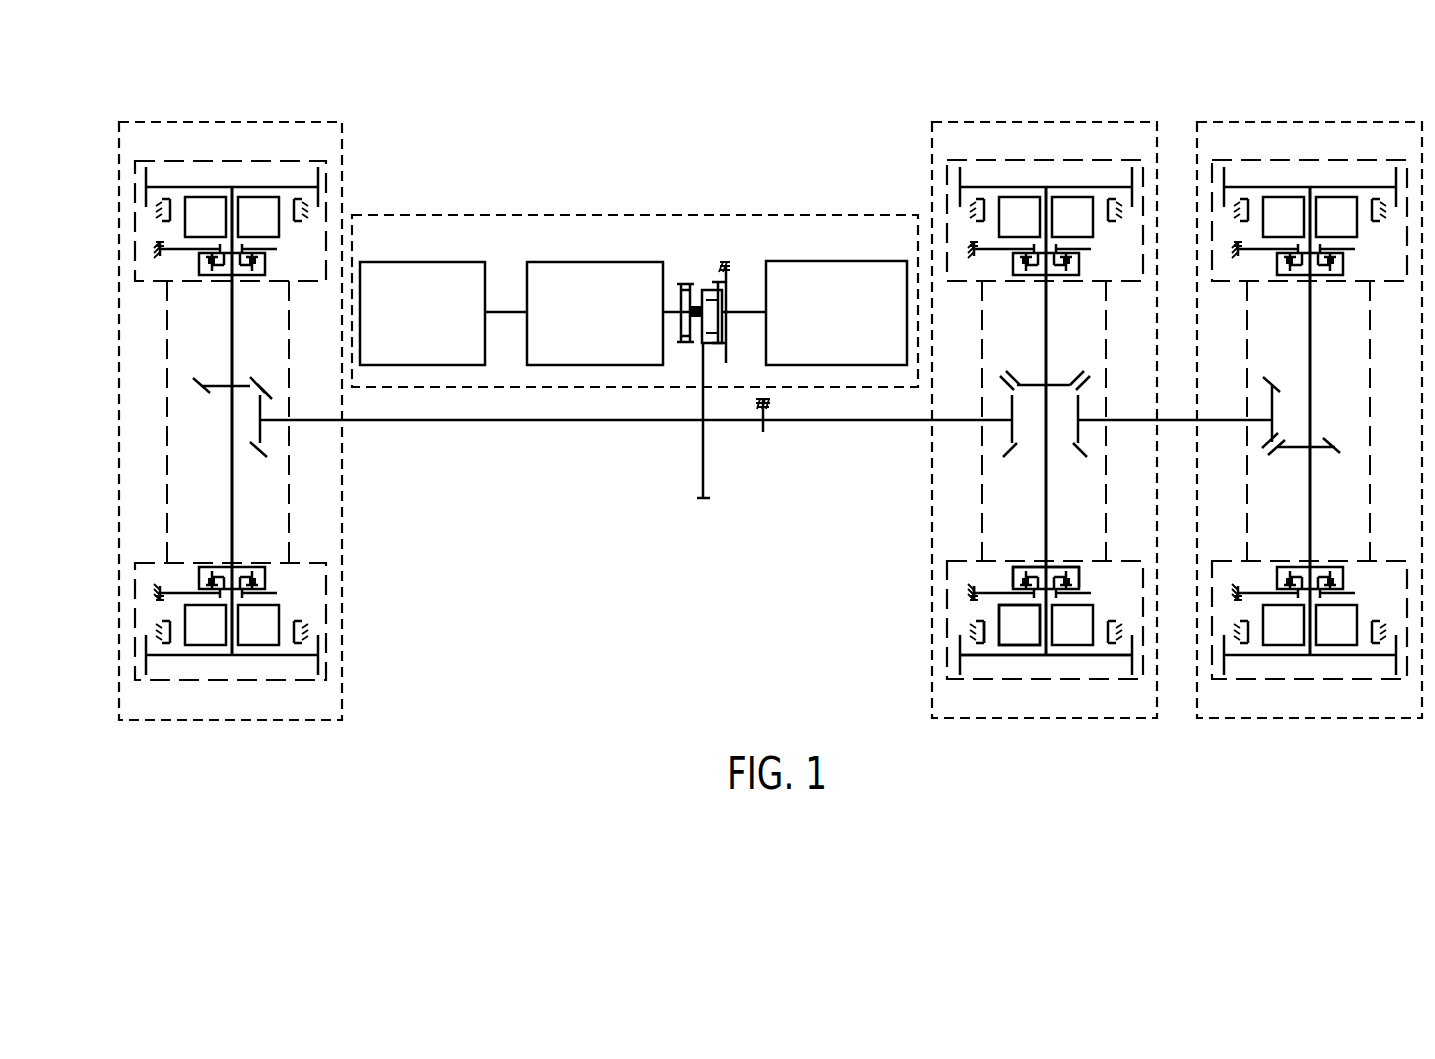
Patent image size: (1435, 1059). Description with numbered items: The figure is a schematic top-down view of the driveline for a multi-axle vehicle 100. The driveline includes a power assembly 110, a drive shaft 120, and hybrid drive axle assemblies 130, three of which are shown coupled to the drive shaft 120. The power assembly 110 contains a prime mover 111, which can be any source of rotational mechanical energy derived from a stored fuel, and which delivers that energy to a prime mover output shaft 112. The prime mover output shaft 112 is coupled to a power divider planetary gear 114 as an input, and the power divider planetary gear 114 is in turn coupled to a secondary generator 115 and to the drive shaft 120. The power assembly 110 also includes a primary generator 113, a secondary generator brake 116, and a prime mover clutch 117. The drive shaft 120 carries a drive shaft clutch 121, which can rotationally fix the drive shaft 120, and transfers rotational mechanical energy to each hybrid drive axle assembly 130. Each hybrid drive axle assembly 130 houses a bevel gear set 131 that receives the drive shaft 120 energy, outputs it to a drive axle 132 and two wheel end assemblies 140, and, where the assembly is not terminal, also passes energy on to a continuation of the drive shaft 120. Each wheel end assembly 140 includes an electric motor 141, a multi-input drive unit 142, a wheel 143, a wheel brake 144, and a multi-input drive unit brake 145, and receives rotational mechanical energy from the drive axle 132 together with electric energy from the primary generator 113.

The multi-axle vehicle 100 is at (1212, 60).
The power assembly 110 is at (630, 215).
The prime mover 111 is at (422, 262).
The prime mover output shaft 112 is at (506, 312).
The primary generator 113 is at (590, 262).
The power divider planetary gear 114 is at (723, 295).
The secondary generator 115 is at (838, 261).
The secondary generator brake 116 is at (730, 262).
The prime mover clutch 117 is at (686, 282).
The drive shaft 120 is at (877, 421).
The drive shaft clutch 121 is at (772, 400).
The hybrid drive axle assembly 130 is at (233, 122).
The bevel gear set 131 is at (260, 432).
The drive axle 132 is at (232, 493).
The wheel end assembly 140 is at (328, 181).
The electric motor 141 is at (1018, 644).
The multi-input drive unit 142 is at (1013, 572).
The wheel 143 is at (957, 663).
The wheel brake 144 is at (967, 627).
The multi-input drive unit brake 145 is at (973, 593).